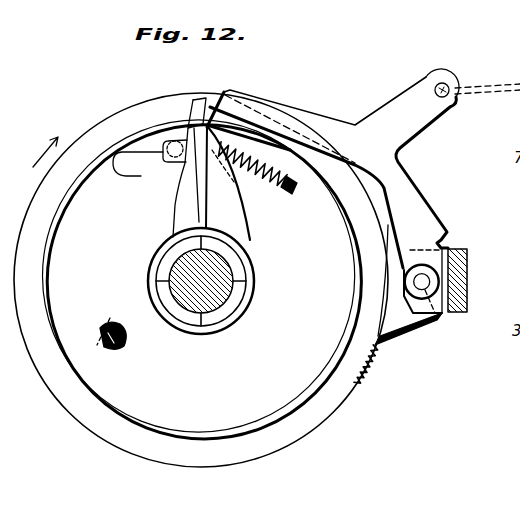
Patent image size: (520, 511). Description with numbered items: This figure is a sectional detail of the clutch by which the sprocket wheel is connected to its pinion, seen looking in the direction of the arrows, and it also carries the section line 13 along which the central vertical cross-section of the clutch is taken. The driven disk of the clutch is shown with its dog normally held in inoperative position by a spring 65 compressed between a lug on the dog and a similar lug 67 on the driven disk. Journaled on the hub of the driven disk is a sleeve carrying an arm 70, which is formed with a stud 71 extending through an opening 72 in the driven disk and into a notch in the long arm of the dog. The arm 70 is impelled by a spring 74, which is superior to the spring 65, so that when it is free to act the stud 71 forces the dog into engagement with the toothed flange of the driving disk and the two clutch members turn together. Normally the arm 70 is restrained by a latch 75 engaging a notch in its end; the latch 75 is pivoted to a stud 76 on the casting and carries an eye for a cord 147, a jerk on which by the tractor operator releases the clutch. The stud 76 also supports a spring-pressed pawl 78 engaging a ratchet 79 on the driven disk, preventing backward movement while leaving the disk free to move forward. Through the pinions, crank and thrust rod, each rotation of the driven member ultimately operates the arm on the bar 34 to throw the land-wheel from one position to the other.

The section line 13— 13 is at (205, 85).
The bar 34 is at (212, 275).
The spring 65 is at (126, 342).
The lug 67 is at (102, 347).
The arm 70 is at (212, 197).
The stud 71 is at (174, 141).
The opening 72 is at (144, 163).
The spring 74 is at (278, 162).
The latch 75 is at (283, 103).
The stud 76 is at (430, 282).
The spring-pressed pawl 78 is at (400, 332).
The ratchet 79 is at (370, 370).
The cord 147 is at (480, 80).